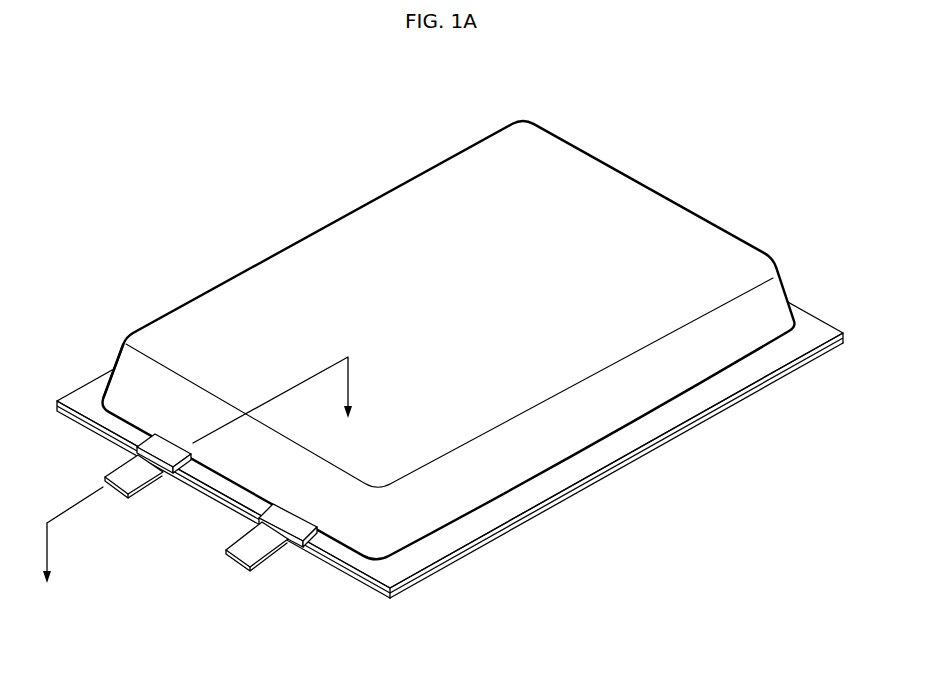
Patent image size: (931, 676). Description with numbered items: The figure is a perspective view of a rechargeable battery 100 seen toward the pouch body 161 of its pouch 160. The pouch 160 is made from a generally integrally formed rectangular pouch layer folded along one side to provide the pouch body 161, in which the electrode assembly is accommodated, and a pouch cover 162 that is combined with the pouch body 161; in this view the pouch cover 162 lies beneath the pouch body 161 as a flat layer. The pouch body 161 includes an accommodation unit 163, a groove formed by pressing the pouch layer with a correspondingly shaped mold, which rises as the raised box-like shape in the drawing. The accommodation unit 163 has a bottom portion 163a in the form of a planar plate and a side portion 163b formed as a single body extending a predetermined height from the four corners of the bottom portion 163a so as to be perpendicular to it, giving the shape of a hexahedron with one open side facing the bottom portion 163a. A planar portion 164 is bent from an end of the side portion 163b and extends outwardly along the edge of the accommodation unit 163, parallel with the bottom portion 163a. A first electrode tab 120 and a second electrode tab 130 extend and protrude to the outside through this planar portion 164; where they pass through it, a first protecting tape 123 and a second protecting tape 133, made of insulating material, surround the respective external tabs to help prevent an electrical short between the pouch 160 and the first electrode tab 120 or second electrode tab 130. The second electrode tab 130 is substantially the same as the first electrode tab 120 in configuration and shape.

The rechargeable battery 100 is at (441, 372).
The first electrode tab 120 is at (124, 486).
The first protecting tape 123 is at (136, 452).
The second electrode tab 130 is at (240, 549).
The second protecting tape 133 is at (262, 523).
The pouch 160 is at (461, 389).
The pouch body 161 is at (672, 417).
The pouch cover 162 is at (790, 391).
The accommodation unit 163 is at (426, 340).
The bottom portion 163a is at (193, 308).
The side portion 163b is at (120, 384).
The planar portion 164 is at (352, 561).